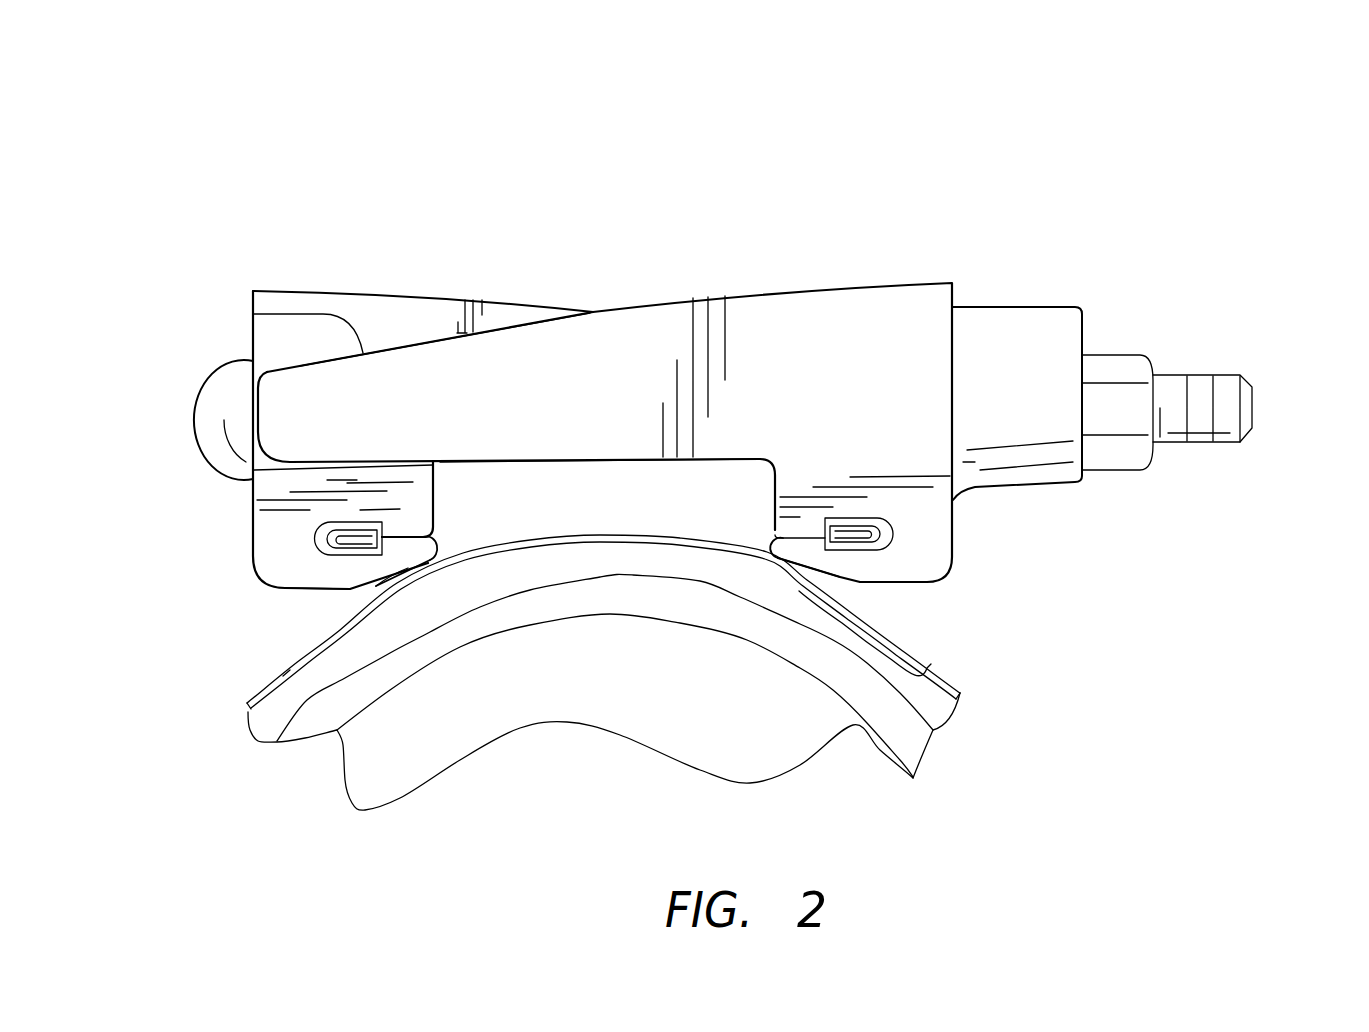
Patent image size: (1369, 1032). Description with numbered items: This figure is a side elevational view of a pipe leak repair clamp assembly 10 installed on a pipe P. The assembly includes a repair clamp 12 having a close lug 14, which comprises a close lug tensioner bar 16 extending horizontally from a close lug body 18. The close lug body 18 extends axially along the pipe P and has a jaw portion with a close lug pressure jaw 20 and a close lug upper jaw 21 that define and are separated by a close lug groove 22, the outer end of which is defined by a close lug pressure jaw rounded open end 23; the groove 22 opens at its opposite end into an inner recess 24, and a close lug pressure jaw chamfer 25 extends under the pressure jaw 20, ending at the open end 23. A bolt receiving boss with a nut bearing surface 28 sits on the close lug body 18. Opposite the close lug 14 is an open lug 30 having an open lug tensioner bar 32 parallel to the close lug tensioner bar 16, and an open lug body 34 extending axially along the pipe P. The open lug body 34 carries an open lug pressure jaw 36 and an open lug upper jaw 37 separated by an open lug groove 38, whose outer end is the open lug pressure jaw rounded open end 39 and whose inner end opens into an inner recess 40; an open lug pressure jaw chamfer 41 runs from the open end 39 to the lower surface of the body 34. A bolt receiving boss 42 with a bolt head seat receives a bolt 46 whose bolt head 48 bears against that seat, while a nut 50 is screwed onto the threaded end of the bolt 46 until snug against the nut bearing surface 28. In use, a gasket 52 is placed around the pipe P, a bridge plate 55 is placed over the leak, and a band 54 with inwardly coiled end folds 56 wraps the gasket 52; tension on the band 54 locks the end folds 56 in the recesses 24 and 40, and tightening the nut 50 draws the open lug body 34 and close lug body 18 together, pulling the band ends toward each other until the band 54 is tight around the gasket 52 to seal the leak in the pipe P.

The pipe leak repair clamp assembly 10 is at (885, 210).
The repair clamp 12 is at (1020, 282).
The close lug 14 is at (708, 283).
The close lug tensioner bar 16 is at (623, 412).
The close lug body 18 is at (840, 470).
The close lug pressure jaw 20 is at (777, 588).
The close lug upper jaw 21 is at (780, 520).
The close lug groove 22 is at (780, 527).
The close lug pressure jaw rounded open end 23 is at (770, 563).
The inner recess 24 is at (925, 548).
The close lug pressure jaw chamfer 25 is at (807, 620).
The nut bearing surface 28 is at (1083, 330).
The open lug 30 is at (383, 292).
The open lug tensioner bar 32 is at (492, 316).
The open lug body 34 is at (358, 482).
The open lug pressure jaw 36 is at (415, 582).
The open lug upper jaw 37 is at (410, 517).
The open lug groove 38 is at (422, 533).
The open lug pressure jaw rounded open end 39 is at (458, 557).
The inner recess 40 is at (303, 547).
The open lug pressure jaw chamfer 41 is at (377, 590).
The bolt receiving boss 42 is at (243, 493).
The bolt 46 is at (1230, 382).
The bolt head 48 is at (237, 398).
The nut 50 is at (1135, 458).
The gasket 52 is at (313, 670).
The band 54 is at (250, 700).
The bridge plate 55 is at (553, 540).
The end fold 56 is at (310, 537).
The pipe P is at (837, 677).